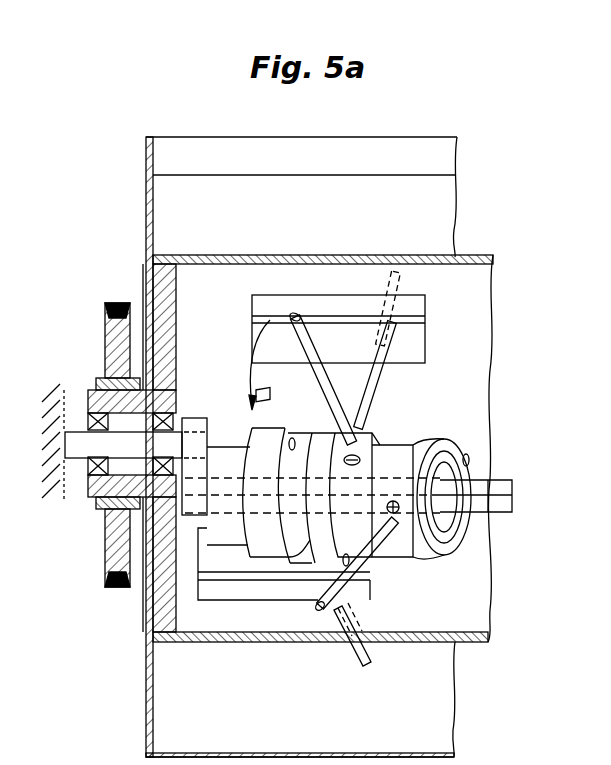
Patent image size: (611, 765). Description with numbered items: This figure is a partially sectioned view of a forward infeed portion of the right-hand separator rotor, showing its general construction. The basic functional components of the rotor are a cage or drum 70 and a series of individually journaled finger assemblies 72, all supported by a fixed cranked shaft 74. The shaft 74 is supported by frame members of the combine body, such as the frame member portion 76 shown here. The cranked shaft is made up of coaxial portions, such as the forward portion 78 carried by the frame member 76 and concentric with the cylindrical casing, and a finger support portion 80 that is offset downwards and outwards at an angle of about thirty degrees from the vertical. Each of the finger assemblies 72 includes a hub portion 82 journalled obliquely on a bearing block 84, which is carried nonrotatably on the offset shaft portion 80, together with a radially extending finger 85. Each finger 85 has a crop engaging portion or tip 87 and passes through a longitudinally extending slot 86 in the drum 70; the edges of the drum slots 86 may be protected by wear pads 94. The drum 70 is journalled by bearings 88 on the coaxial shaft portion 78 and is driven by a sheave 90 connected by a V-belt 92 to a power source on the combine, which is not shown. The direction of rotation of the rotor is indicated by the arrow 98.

The drum 70 is at (236, 256).
The finger assemblies 72 is at (417, 565).
The cranked shaft 74 is at (226, 418).
The frame member portion 76 is at (70, 498).
The forward portion 78 is at (72, 425).
The finger support portion 80 is at (452, 502).
The hub portion 82 is at (397, 432).
The bearing block 84 is at (446, 462).
The finger 85 is at (372, 372).
The slot 86 is at (425, 340).
The tip 87 is at (383, 264).
The bearings 88 is at (82, 405).
The sheave 90 is at (104, 562).
The V-belt 92 is at (117, 585).
The wear pads 94 is at (425, 318).
The arrow 98 is at (505, 470).